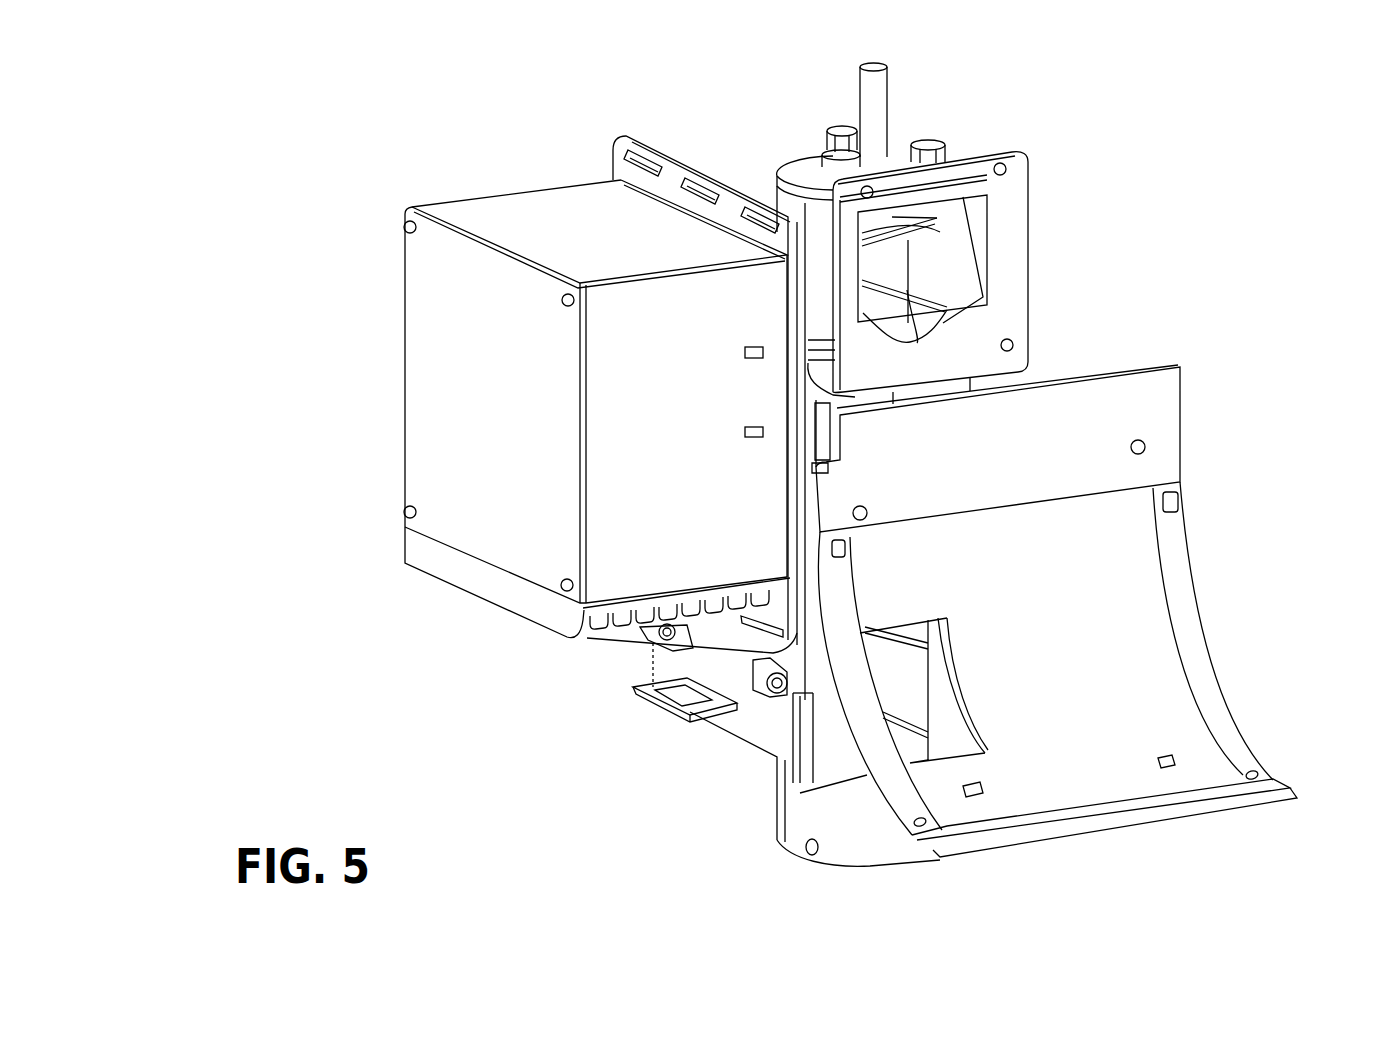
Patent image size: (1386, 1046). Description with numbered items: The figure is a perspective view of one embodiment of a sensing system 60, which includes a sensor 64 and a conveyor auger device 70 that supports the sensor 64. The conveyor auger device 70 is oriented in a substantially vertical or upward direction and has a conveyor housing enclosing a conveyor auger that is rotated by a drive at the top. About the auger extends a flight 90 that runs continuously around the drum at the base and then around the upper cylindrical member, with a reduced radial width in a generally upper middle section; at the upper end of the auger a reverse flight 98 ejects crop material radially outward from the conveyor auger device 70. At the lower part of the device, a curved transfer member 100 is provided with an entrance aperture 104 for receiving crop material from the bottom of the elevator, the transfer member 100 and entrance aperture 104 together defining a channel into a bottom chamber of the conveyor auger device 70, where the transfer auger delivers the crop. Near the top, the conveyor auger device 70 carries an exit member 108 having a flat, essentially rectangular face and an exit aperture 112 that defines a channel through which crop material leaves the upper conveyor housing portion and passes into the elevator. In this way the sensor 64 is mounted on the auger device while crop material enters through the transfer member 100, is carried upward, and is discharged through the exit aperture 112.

The sensing system 60 is at (607, 697).
The sensor 64 is at (520, 207).
The conveyor auger device 70 is at (786, 159).
The flight 90 is at (903, 712).
The reverse flight 98 is at (905, 238).
The curved transfer member 100 is at (1032, 780).
The entrance aperture 104 is at (952, 723).
The exit member 108 is at (1005, 288).
The exit aperture 112 is at (977, 220).